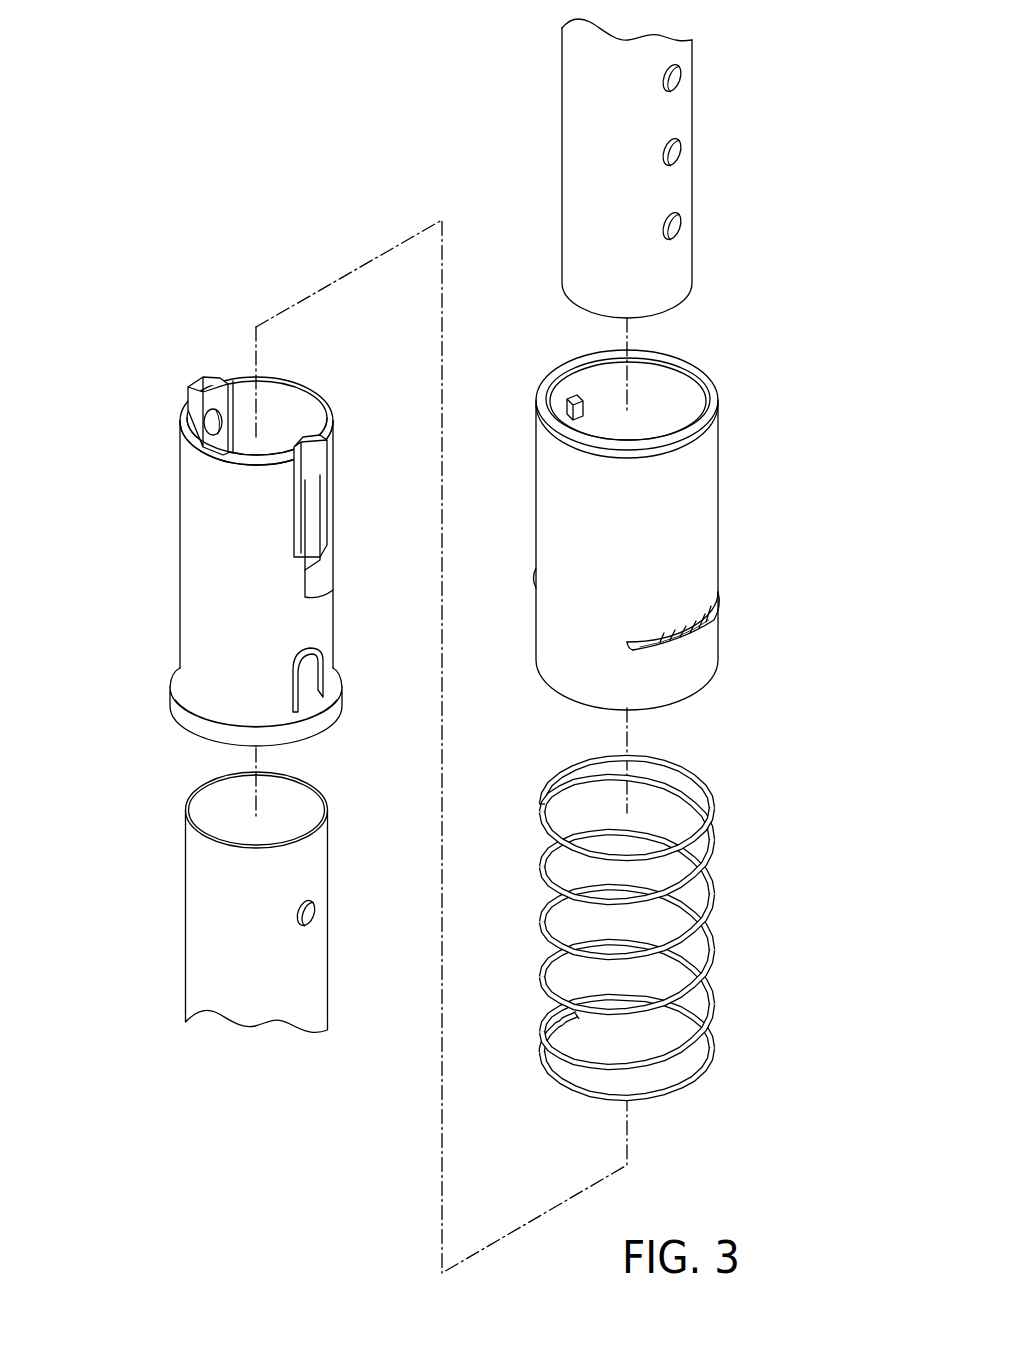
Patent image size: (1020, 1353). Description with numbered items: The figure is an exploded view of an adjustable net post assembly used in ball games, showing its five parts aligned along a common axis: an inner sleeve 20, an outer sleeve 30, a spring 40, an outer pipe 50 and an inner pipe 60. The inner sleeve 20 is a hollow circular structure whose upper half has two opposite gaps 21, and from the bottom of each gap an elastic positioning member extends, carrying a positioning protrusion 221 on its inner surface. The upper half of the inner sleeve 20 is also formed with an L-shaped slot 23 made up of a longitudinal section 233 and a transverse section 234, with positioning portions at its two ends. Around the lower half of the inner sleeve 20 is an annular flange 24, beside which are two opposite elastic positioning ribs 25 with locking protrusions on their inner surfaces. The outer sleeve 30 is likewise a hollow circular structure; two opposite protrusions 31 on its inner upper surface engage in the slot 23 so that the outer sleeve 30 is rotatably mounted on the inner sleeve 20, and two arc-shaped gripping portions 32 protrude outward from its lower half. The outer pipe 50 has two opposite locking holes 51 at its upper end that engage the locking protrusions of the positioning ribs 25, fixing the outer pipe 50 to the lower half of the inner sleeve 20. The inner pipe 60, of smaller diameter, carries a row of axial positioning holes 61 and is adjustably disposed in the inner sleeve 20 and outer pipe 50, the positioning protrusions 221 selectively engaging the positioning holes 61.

The inner sleeve 20 is at (264, 528).
The gap 21 is at (231, 384).
The positioning protrusion 221 is at (210, 422).
The slot 23 is at (371, 536).
The longitudinal section 233 is at (312, 532).
The transverse section 234 is at (314, 575).
The annular flange 24 is at (178, 697).
The elastic positioning rib 25 is at (300, 670).
The outer sleeve 30 is at (656, 517).
The protrusion 31 is at (576, 396).
The gripping portion 32 is at (718, 620).
The spring 40 is at (708, 950).
The outer pipe 50 is at (296, 902).
The locking hole 51 is at (311, 913).
The inner pipe 60 is at (637, 168).
The positioning hole 61 is at (676, 78).